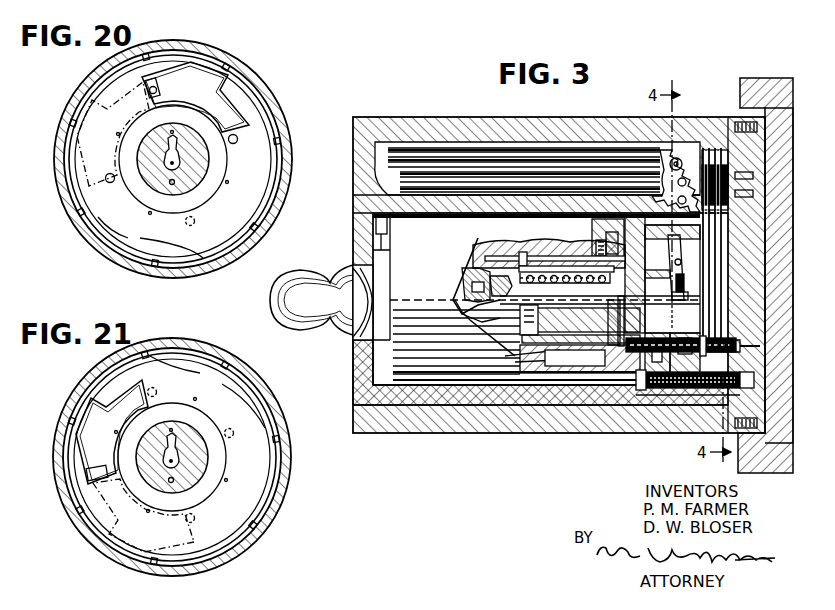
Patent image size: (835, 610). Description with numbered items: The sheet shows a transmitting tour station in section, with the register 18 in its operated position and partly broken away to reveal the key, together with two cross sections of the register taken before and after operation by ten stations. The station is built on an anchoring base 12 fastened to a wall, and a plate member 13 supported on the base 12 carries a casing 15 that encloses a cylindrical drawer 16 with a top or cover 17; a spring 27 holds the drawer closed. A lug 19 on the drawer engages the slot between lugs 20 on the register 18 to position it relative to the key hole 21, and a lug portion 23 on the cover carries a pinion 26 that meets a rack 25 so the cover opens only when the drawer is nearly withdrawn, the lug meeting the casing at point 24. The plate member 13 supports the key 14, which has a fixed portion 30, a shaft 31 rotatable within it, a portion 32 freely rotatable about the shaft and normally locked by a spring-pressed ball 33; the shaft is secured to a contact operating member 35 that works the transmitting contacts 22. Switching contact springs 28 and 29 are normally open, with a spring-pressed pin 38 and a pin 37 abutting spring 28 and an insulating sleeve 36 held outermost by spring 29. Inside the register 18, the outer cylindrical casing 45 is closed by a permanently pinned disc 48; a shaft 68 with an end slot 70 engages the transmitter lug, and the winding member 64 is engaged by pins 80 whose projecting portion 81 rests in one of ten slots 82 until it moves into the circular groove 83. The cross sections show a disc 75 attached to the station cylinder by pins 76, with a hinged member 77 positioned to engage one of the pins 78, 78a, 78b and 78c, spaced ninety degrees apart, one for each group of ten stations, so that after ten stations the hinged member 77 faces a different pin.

In FIG. 3, the anchoring base 12 is at (745, 110).
In FIG. 3, the plate member 13 is at (760, 258).
In FIG. 3, the key 14 is at (506, 306).
In FIG. 3, the casing 15 is at (538, 117).
In FIG. 3, the cylindrical drawer 16 is at (352, 369).
In FIG. 3, the top or cover 17 is at (352, 205).
In FIG. 3, the register 18 is at (455, 212).
In FIG. 3, the lug 19 is at (383, 276).
In FIG. 3, the lugs 20 is at (387, 224).
In FIG. 3, the key hole 21 is at (672, 279).
In FIG. 3, the transmitting contacts 22 is at (680, 246).
In FIG. 3, the lug portion 23 is at (664, 182).
In FIG. 3, the point 24 is at (440, 178).
In FIG. 3, the rack 25 is at (590, 228).
In FIG. 3, the pinion 26 is at (655, 160).
In FIG. 3, the spring 27 is at (695, 389).
In FIG. 3, the contact spring 28 is at (729, 232).
In FIG. 3, the contact spring 29 is at (716, 272).
In FIG. 3, the fixed portion 30 is at (580, 320).
In FIG. 3, the shaft 31 is at (686, 341).
In FIG. 3, the rotatable portion 32 is at (478, 324).
In FIG. 3, the spring-pressed ball 33 is at (486, 238).
In FIG. 3, the contact operating member 35 is at (700, 285).
In FIG. 3, the insulating sleeve 36 is at (657, 344).
In FIG. 3, the pin 37 is at (720, 340).
In FIG. 3, the spring-pressed pin 38 is at (758, 348).
In FIG. 20, the outer cylindrical casing 45 is at (238, 52).
In FIG. 21, the outer cylindrical casing 45 is at (208, 341).
In FIG. 20, the disc 48 is at (200, 173).
In FIG. 21, the disc 48 is at (193, 477).
In FIG. 3, the winding member 64 is at (500, 344).
In FIG. 3, the shaft 68 is at (465, 288).
In FIG. 3, the slot 70 is at (462, 316).
In FIG. 20, the disc 75 is at (75, 156).
In FIG. 21, the disc 75 is at (238, 388).
In FIG. 20, the pins 76 is at (150, 237).
In FIG. 21, the pins 76 is at (206, 391).
In FIG. 20, the hinged member 77 is at (217, 100).
In FIG. 21, the hinged member 77 is at (98, 448).
In FIG. 3, the hinged member 77 is at (516, 345).
In FIG. 20, the pin 78 is at (150, 97).
In FIG. 21, the pin 78 is at (157, 391).
In FIG. 3, the pin 78 is at (612, 243).
In FIG. 20, the pin 78a is at (110, 183).
In FIG. 21, the pin 78a is at (108, 480).
In FIG. 20, the pin 78b is at (196, 222).
In FIG. 21, the pin 78b is at (196, 519).
In FIG. 3, the pin 78b is at (608, 321).
In FIG. 20, the pin 78c is at (238, 141).
In FIG. 21, the pin 78c is at (232, 438).
In FIG. 3, the pin 80 is at (574, 250).
In FIG. 3, the projecting portion 81 is at (521, 250).
In FIG. 3, the slots 82 is at (547, 250).
In FIG. 3, the circular groove 83 is at (525, 358).